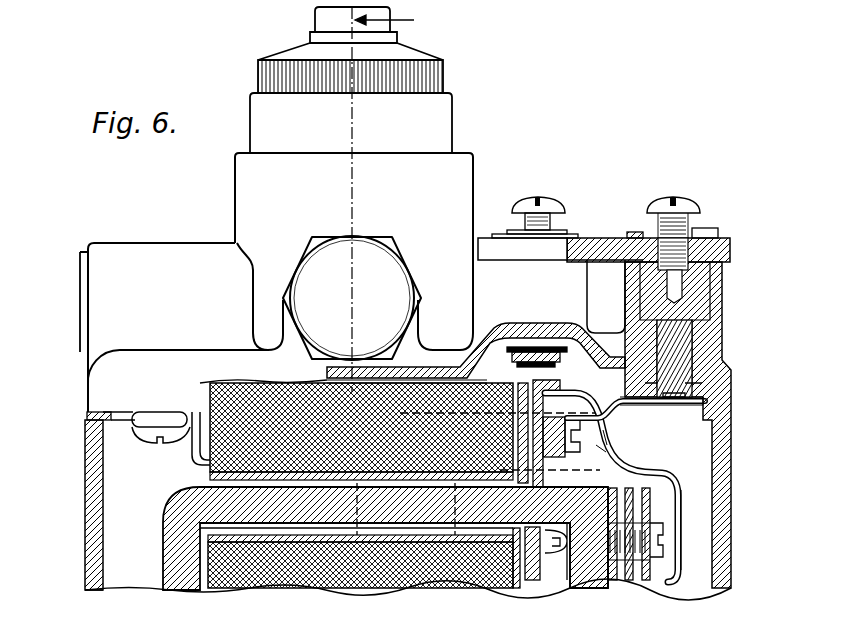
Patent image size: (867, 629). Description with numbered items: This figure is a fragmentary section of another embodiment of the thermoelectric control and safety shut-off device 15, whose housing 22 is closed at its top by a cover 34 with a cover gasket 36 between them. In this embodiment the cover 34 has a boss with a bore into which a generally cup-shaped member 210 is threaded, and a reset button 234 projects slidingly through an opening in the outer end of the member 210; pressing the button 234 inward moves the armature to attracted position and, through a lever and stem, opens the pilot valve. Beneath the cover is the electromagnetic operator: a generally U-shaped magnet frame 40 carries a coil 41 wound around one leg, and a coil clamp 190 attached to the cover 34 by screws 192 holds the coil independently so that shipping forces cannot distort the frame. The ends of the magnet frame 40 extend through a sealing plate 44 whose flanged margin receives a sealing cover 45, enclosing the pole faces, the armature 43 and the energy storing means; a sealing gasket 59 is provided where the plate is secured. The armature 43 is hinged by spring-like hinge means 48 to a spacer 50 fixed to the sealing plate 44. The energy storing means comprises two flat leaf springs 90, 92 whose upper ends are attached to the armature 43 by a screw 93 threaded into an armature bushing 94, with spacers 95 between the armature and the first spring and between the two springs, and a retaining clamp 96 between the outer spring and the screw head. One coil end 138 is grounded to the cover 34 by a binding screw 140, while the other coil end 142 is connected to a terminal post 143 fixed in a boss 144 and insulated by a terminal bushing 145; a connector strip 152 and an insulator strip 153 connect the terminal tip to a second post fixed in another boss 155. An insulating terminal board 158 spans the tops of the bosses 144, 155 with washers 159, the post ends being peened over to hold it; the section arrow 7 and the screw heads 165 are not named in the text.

The reset button 234 is at (322, 19).
The section line arrow 7 is at (393, 22).
The cup-shaped member 210 is at (440, 110).
The cover 34 is at (95, 393).
The cover gasket 36 is at (87, 416).
The thermoelectric control and safety shut-off device 15 is at (82, 506).
The housing 22 is at (95, 592).
The binding screw 140 is at (147, 438).
The coil end 138 is at (198, 450).
The screws 192 is at (445, 368).
The connector strip 152 is at (520, 350).
The insulator strip 153 is at (542, 352).
The sealing gasket 59 is at (606, 303).
The hinge means 48 is at (566, 477).
The magnet frame 40 is at (163, 548).
The armature 43 is at (590, 567).
The coil clamp 190 is at (317, 585).
The coil 41 is at (258, 590).
The leaf spring 90 is at (622, 581).
The leaf spring 92 is at (645, 581).
The screw 93 is at (650, 508).
The armature bushing 94 is at (664, 552).
The spacers 95 is at (663, 471).
The retaining clamp 96 is at (674, 498).
The coil end 142 is at (618, 438).
The spacer 50 is at (605, 450).
The sealing plate 44 is at (568, 415).
The sealing cover 45 is at (602, 415).
The terminal post 143 is at (722, 310).
The boss 144 is at (717, 278).
The insulating terminal board 158 is at (593, 238).
The boss 155 is at (490, 272).
The terminal bushing 145 is at (694, 340).
The screw 165 is at (550, 176).
The washers 159 is at (705, 231).